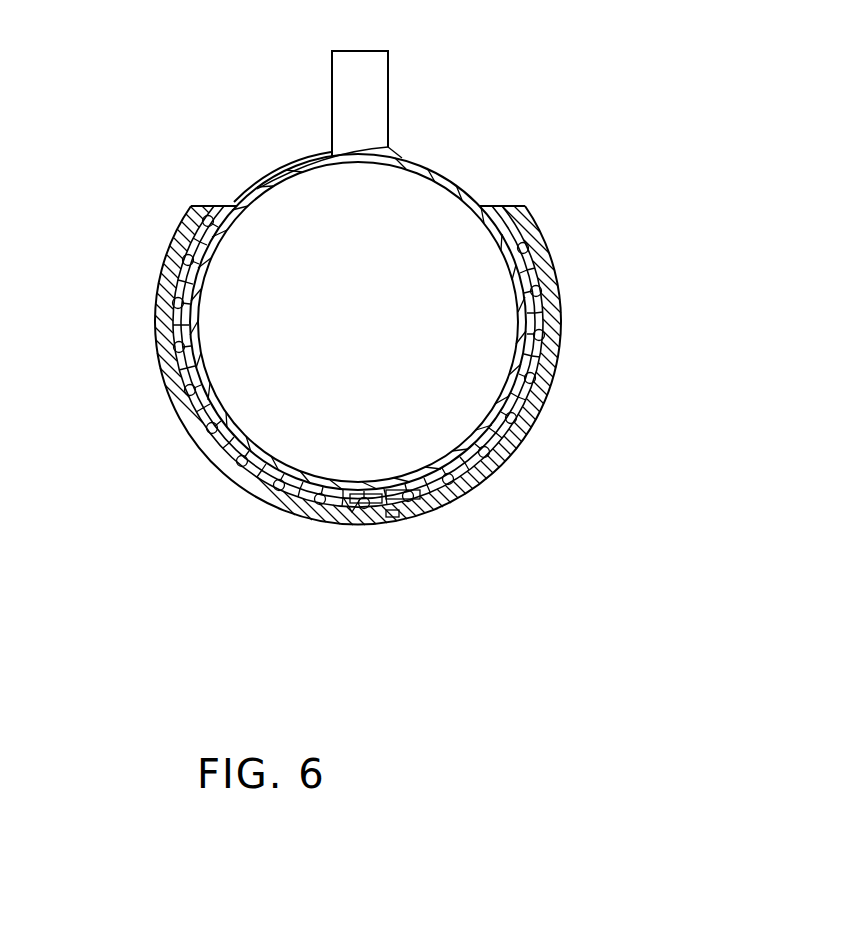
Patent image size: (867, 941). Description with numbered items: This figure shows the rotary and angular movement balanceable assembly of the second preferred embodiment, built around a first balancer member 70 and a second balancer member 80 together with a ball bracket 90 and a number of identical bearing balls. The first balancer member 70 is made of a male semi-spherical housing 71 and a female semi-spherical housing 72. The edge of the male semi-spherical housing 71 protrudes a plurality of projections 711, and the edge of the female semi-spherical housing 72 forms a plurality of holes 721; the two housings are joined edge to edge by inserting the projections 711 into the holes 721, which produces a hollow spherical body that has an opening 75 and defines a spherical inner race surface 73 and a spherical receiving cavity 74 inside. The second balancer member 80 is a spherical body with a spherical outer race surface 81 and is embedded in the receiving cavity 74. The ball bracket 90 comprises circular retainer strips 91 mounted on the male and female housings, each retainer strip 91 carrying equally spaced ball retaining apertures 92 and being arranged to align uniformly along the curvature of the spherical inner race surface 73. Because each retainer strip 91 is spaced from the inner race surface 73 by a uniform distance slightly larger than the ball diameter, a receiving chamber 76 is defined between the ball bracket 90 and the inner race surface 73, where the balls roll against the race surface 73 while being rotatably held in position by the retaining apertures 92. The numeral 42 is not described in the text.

The block 42 is at (352, 513).
The first balancer member 70 is at (397, 371).
The male semi-spherical housing 71 is at (163, 385).
The female semi-spherical housing 72 is at (533, 420).
The spherical inner race surface 73 is at (535, 218).
The spherical receiving cavity 74 is at (232, 194).
The opening 75 is at (250, 170).
The receiving chamber 76 is at (158, 317).
The second balancer member 80 is at (457, 122).
The spherical outer race surface 81 is at (472, 190).
The ball bracket 90 is at (230, 443).
The circular retainer strips 91 is at (210, 250).
The ball retaining apertures 92 is at (470, 493).
The projections 711 is at (395, 520).
The holes 721 is at (420, 515).